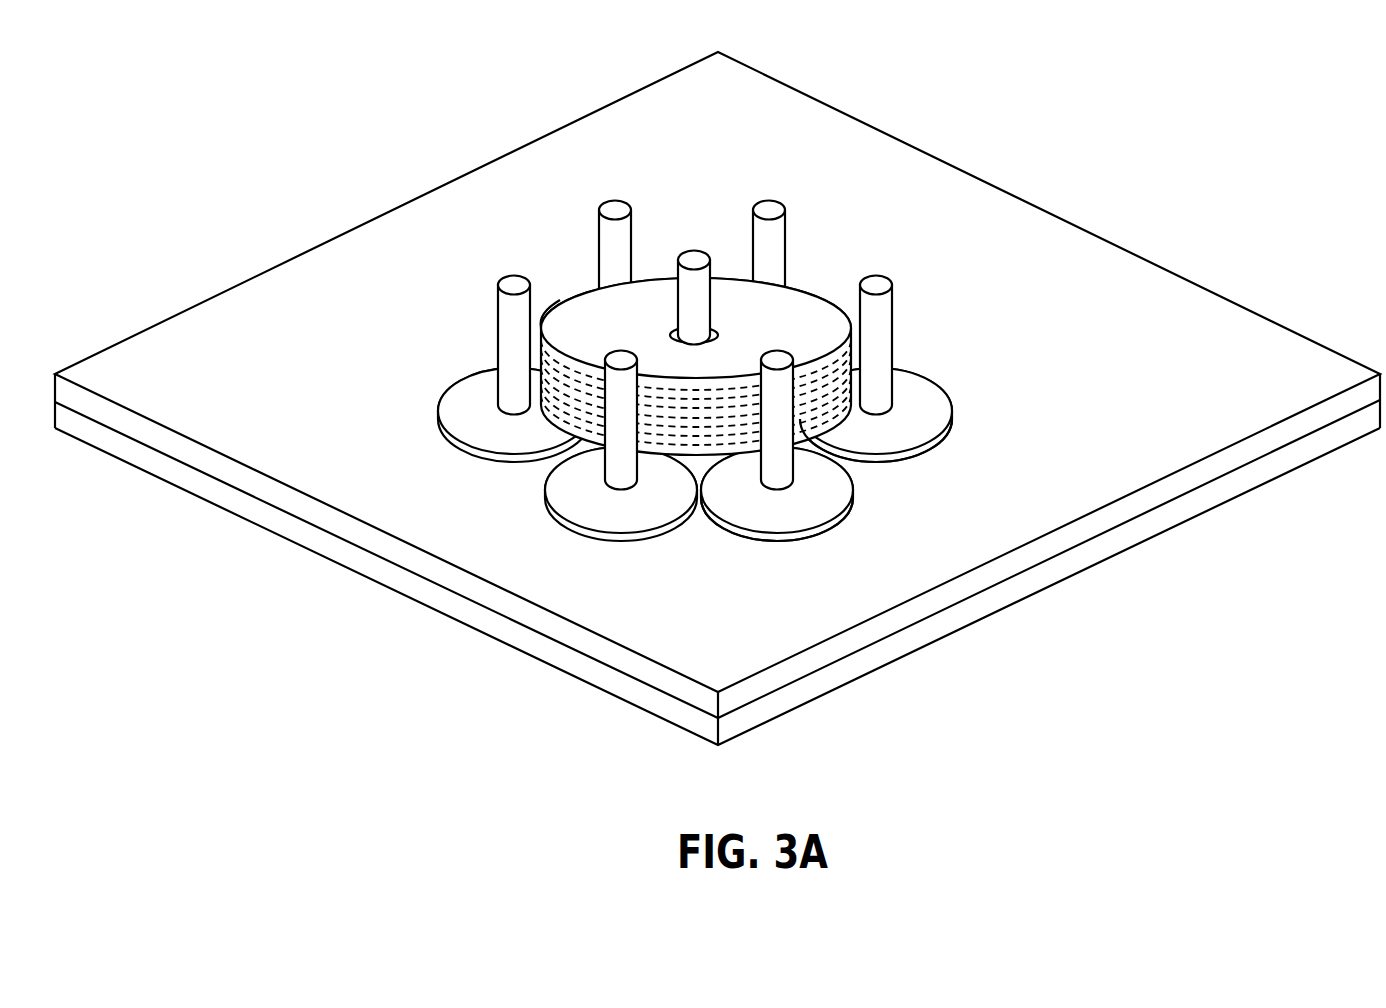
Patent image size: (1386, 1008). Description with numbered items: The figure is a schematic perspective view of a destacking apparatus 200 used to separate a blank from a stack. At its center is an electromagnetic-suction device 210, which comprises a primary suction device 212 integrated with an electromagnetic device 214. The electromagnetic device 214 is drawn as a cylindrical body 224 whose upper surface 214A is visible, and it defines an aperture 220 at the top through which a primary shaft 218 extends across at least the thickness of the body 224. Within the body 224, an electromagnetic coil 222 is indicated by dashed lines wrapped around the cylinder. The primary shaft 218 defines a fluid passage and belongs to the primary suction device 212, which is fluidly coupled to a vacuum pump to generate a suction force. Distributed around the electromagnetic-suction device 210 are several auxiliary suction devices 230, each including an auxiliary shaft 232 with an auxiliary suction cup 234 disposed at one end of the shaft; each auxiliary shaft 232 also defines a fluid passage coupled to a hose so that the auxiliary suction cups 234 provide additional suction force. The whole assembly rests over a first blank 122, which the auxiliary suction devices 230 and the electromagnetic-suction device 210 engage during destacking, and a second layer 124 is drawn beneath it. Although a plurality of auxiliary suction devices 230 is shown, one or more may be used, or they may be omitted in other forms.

The first blank 122 is at (1022, 201).
The lower plate layer 124 is at (1258, 488).
The destacking apparatus 200 is at (898, 246).
The electromagnetic-suction device 210 is at (704, 277).
The primary suction device 212 is at (715, 292).
The electromagnetic device 214 is at (793, 300).
The surface 214A is at (813, 337).
The primary shaft 218 is at (697, 251).
The aperture 220 is at (662, 327).
The electromagnetic coil 222 is at (565, 447).
The body 224 is at (565, 301).
The auxiliary suction device 230 is at (915, 393).
The auxiliary shaft 232 is at (893, 311).
The auxiliary suction cup 234 is at (918, 430).